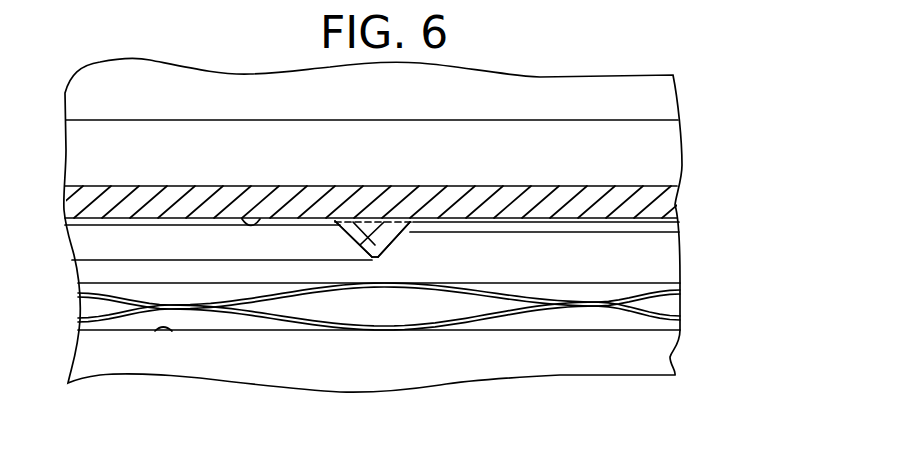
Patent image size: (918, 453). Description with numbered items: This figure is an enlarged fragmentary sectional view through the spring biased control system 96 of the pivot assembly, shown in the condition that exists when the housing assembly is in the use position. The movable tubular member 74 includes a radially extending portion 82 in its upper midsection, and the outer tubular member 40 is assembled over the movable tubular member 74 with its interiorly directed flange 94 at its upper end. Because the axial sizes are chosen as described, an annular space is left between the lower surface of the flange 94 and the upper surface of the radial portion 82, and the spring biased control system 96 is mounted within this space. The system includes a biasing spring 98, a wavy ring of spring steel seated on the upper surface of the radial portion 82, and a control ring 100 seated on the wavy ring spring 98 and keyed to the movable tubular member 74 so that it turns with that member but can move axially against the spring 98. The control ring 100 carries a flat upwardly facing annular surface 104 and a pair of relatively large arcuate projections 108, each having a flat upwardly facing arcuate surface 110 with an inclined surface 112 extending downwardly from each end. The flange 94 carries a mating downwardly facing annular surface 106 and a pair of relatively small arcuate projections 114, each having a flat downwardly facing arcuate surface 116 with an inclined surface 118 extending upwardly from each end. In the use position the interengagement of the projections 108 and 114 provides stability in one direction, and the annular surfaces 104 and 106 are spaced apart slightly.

The movable tubular member 74 is at (668, 108).
The outer tubular member 40 is at (667, 165).
The interiorly directed flange 94 is at (553, 193).
The spring biased control system 96 is at (689, 204).
The inner upwardly facing annular surface 104 is at (157, 223).
The inner downwardly facing annular surface 106 is at (266, 218).
The arcuate projection 108 is at (530, 248).
The upwardly facing arcuate surface 110 is at (567, 229).
The control ring 100 is at (682, 258).
The inclined surface 112 is at (388, 268).
The arcuate projection 114 is at (394, 235).
The downwardly facing arcuate surface 116 is at (372, 257).
The inclined surface 118 is at (340, 225).
The biasing spring 98 is at (462, 327).
The radially extending portion 82 is at (157, 331).